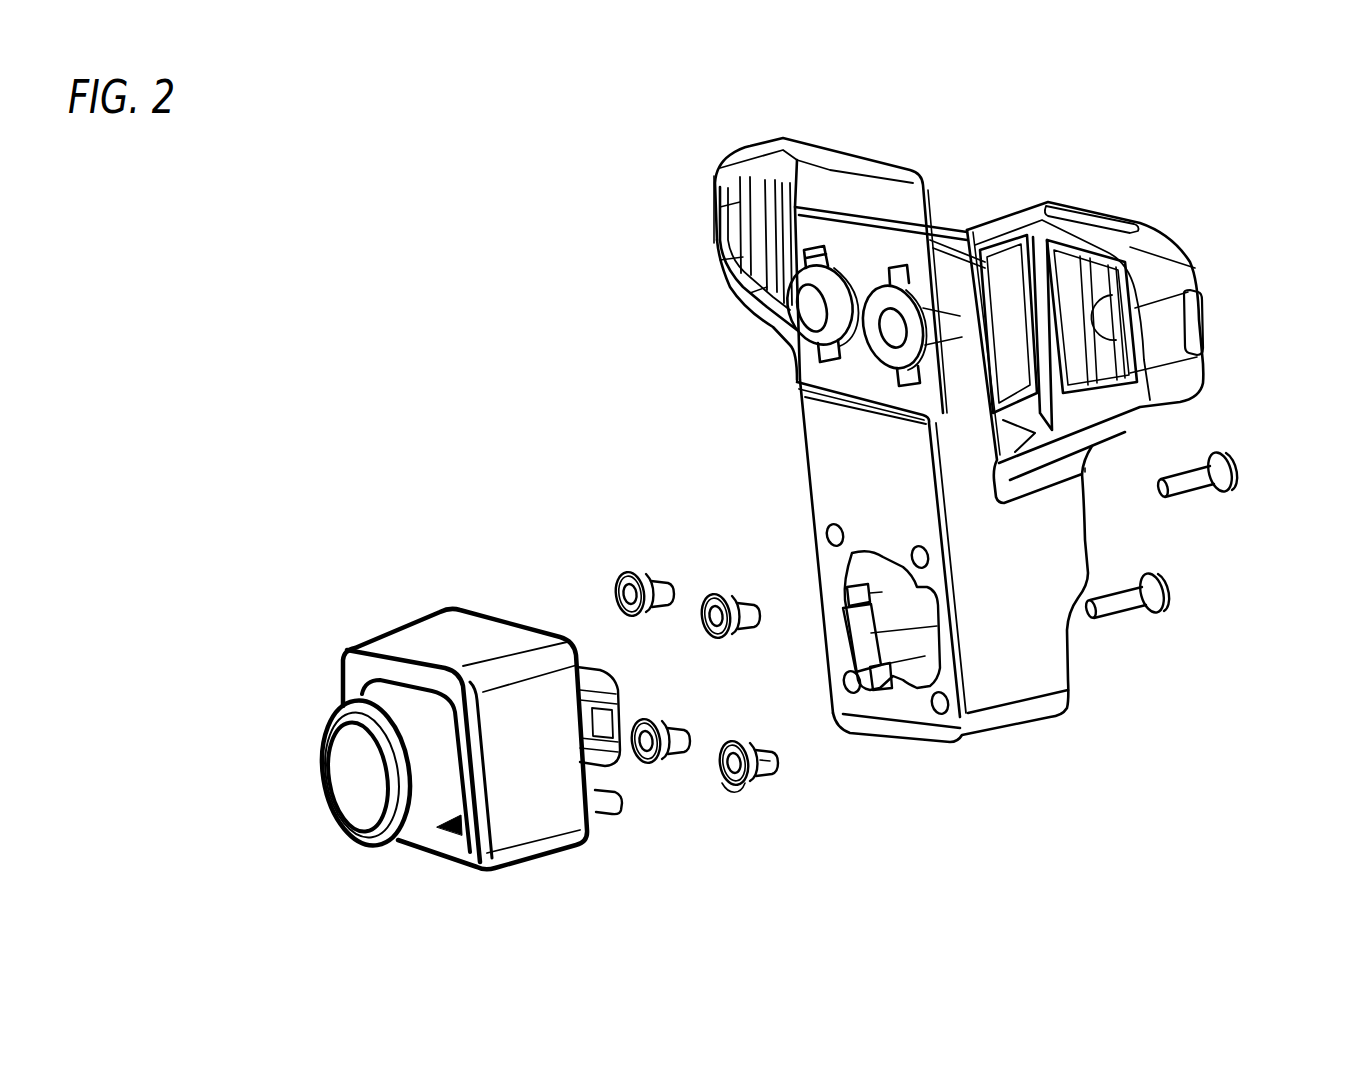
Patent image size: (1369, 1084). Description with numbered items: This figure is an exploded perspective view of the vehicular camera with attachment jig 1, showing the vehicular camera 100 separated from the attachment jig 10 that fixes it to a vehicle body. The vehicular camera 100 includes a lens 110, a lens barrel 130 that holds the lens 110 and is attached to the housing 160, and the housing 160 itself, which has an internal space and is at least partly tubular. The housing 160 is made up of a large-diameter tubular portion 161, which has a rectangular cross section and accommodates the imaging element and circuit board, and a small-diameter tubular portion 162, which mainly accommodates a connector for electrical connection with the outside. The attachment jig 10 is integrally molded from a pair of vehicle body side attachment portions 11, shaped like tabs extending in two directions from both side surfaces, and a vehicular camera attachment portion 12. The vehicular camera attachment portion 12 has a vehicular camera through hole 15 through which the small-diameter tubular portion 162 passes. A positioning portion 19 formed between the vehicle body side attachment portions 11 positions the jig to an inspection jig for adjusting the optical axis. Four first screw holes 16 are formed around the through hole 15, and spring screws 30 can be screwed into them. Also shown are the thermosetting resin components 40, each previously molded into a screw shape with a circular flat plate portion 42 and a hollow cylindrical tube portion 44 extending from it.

The vehicular camera with attachment jig 1 is at (446, 165).
The attachment jig 10 is at (1042, 162).
The vehicle body side attachment portion 11 is at (713, 237).
The vehicular camera attachment portion 12 is at (1013, 682).
The vehicular camera through hole 15 is at (887, 611).
The first screw hole 16 is at (912, 552).
The positioning portion 19 is at (882, 300).
The spring screw 30 is at (1175, 600).
The thermosetting resin 40 is at (637, 573).
The flat plate portion 42 is at (747, 787).
The tube portion 44 is at (773, 768).
The vehicular camera 100 is at (321, 558).
The lens 110 is at (338, 776).
The lens barrel 130 is at (420, 812).
The housing 160 is at (397, 539).
The large-diameter tubular portion 161 is at (417, 622).
The small-diameter tubular portion 162 is at (590, 670).